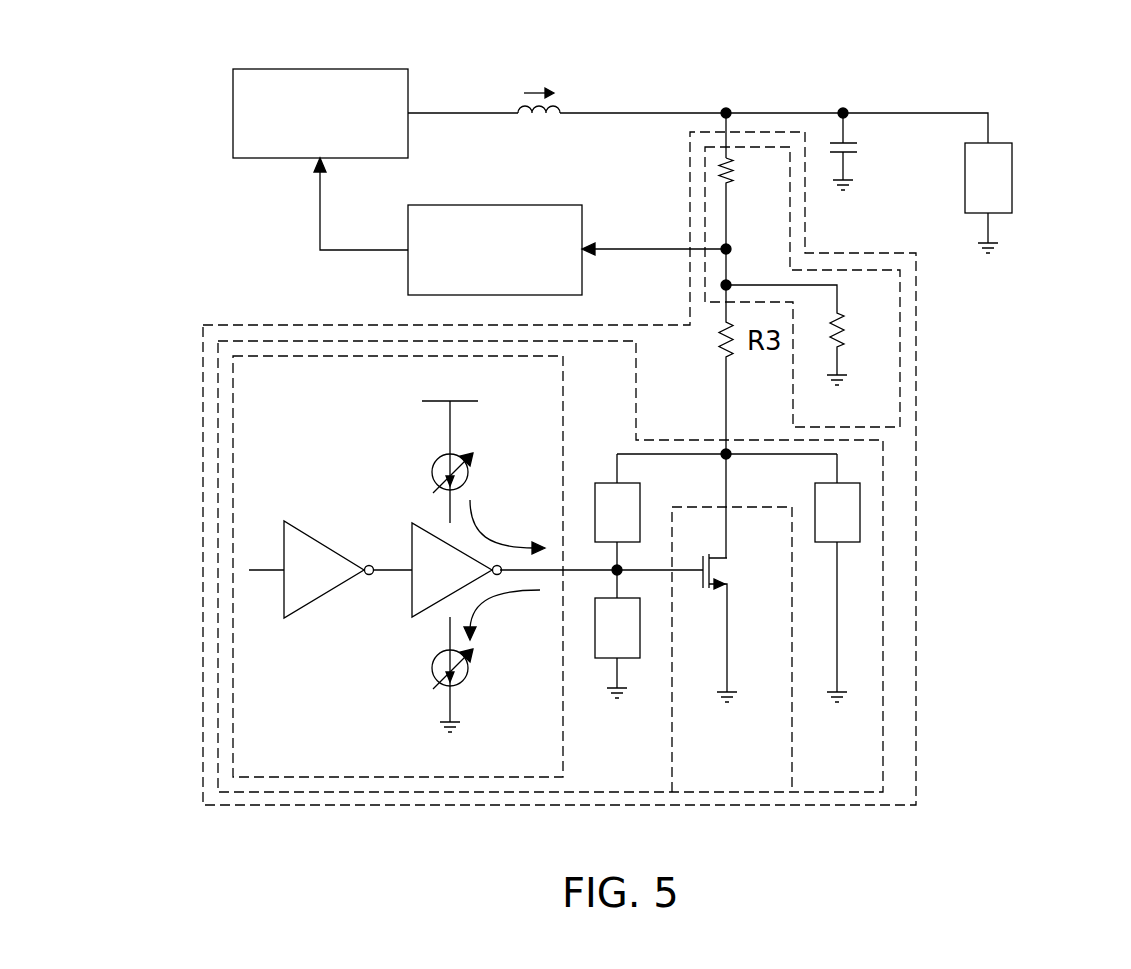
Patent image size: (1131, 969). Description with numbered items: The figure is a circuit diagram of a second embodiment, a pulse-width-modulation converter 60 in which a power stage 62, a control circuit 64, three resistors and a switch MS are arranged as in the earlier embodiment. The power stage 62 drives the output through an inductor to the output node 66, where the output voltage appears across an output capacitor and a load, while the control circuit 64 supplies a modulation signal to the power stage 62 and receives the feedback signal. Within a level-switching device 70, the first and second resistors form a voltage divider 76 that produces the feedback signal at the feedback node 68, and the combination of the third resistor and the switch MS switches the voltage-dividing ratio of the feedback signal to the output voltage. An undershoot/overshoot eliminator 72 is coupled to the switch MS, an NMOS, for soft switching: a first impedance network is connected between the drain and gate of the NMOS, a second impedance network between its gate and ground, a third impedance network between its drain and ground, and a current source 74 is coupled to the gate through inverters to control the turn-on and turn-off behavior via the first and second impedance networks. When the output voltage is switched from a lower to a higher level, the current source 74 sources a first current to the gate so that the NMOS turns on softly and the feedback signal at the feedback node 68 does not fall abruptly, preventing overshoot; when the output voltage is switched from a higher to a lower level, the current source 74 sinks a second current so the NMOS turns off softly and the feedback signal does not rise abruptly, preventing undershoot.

The PWM converter 60 is at (1066, 68).
The power stage 62 is at (262, 158).
The control circuit 64 is at (490, 205).
The output node 66 is at (729, 109).
The feedback node 68 is at (724, 251).
The level-switching device 70 is at (916, 530).
The undershoot/overshoot eliminator 72 is at (636, 420).
The current source 74 is at (565, 452).
The voltage divider 76 is at (900, 352).